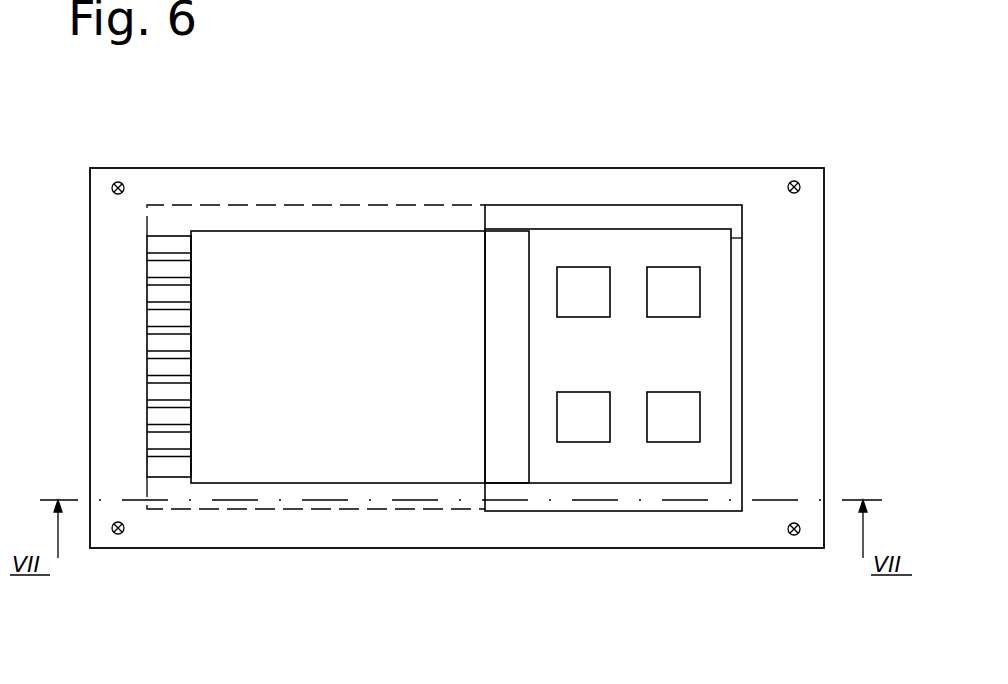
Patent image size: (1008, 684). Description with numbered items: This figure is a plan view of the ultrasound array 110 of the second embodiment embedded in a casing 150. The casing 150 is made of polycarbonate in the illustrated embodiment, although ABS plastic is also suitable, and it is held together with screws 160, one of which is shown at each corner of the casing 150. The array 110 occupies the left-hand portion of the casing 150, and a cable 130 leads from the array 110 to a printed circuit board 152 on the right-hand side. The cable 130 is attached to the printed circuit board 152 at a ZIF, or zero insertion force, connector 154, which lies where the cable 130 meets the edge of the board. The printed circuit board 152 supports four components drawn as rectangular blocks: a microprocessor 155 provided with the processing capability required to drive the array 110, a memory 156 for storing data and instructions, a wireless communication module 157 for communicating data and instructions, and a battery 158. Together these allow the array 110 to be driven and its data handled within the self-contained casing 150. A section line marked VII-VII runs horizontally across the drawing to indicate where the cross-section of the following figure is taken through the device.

The array 110 is at (362, 180).
The cable 130 is at (288, 180).
The casing 150 is at (216, 172).
The printed circuit board 152 is at (620, 229).
The ZIF connector 154 is at (517, 240).
The microprocessor 155 is at (577, 275).
The memory 156 is at (688, 289).
The wireless communication module 157 is at (590, 399).
The battery 158 is at (682, 417).
The screws 160 is at (116, 179).